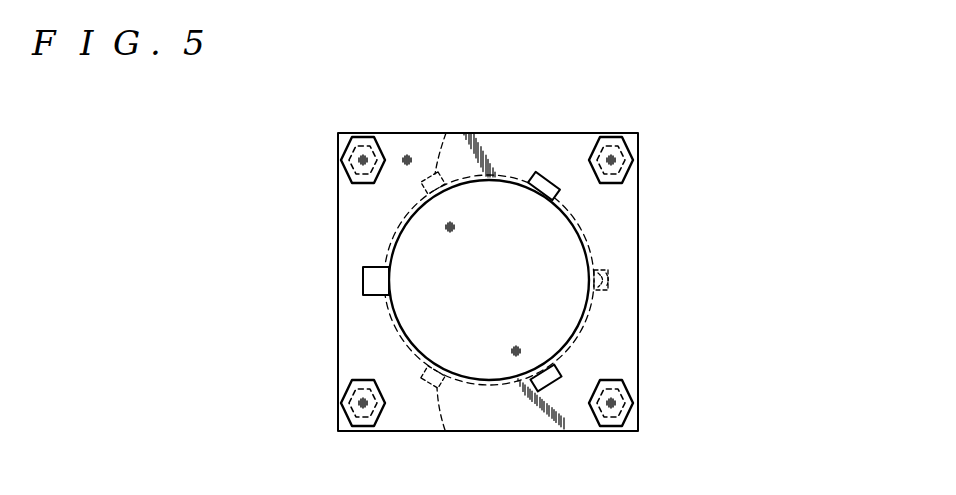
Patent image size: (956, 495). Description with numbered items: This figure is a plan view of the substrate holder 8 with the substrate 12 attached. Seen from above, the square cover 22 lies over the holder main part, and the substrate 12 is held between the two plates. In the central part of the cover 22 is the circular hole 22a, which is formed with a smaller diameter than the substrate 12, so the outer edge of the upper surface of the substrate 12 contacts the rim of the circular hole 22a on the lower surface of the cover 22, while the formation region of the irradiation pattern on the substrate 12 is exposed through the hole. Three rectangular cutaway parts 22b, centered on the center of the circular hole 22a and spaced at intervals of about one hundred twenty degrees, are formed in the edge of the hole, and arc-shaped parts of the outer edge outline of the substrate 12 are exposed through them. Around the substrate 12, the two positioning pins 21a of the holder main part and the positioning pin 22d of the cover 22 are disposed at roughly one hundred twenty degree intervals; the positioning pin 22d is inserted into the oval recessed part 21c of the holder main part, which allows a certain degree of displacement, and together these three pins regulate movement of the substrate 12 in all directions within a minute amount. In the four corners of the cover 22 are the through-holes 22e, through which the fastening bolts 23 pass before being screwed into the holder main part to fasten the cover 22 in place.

The substrate holder 8 is at (430, 98).
The substrate 12 is at (385, 236).
The positioning pin 21a is at (446, 133).
The recessed part 21c is at (612, 280).
The cover 22 is at (597, 133).
The circular hole 22a is at (427, 323).
The cutaway part 22b is at (376, 276).
The positioning pin 22d is at (610, 270).
The through-hole 22e is at (338, 169).
The fastening bolt 23 is at (340, 150).